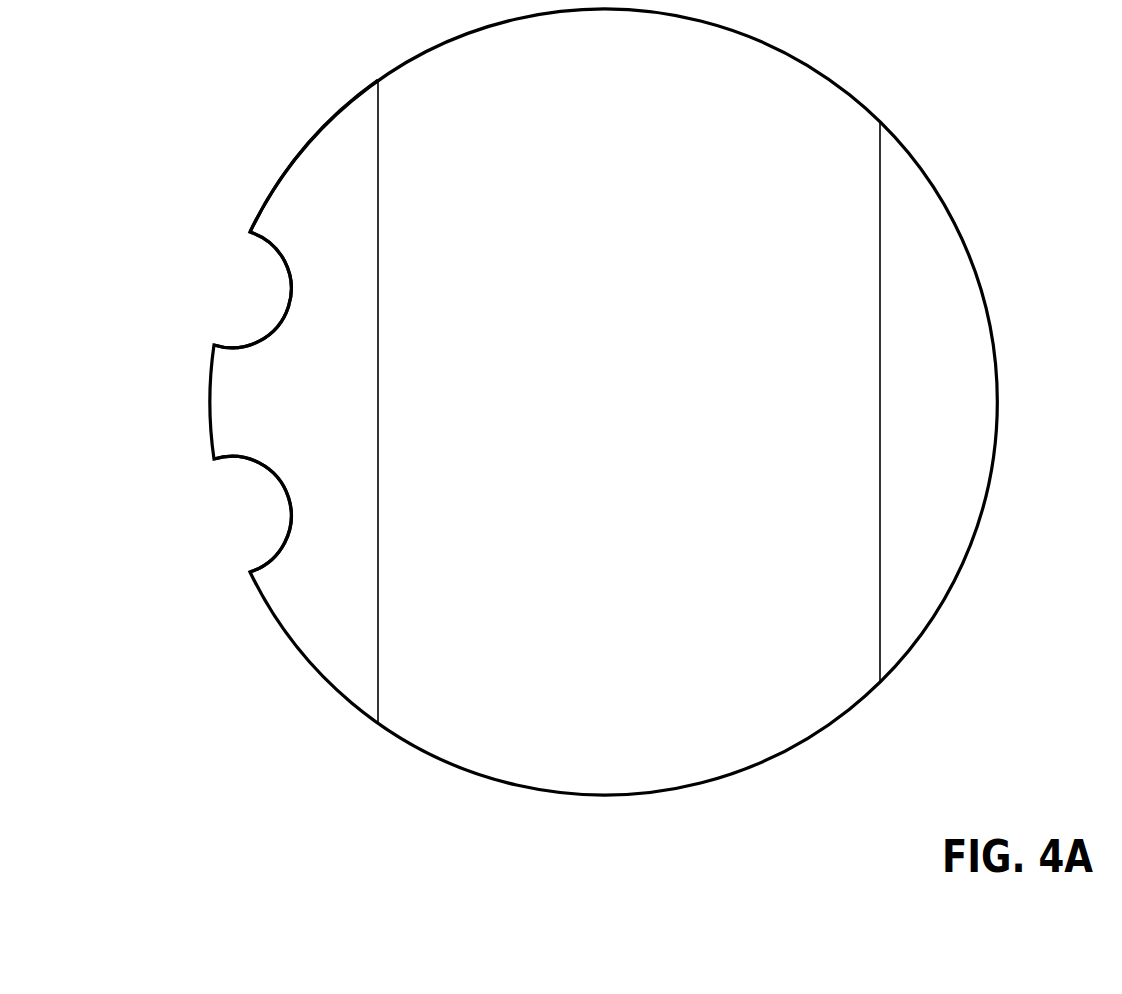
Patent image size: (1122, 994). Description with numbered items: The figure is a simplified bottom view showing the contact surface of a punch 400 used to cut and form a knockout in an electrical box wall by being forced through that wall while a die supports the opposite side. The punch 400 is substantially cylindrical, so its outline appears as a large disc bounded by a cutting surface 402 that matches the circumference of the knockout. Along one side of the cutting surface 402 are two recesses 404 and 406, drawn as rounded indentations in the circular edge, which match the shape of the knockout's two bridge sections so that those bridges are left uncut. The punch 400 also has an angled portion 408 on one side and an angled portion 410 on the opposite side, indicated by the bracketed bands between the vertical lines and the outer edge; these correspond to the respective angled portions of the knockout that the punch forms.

The punch 400 is at (300, 670).
The cutting surface 402 is at (308, 158).
The recess 404 is at (238, 285).
The recess 406 is at (237, 524).
The angled portion 408 is at (375, 70).
The angled portion 410 is at (997, 111).